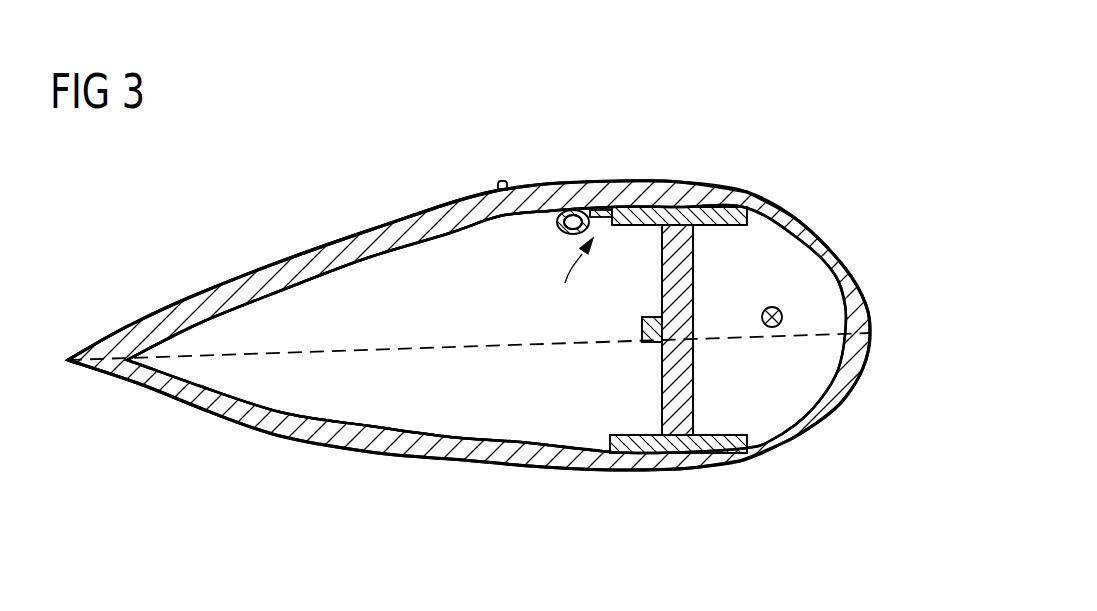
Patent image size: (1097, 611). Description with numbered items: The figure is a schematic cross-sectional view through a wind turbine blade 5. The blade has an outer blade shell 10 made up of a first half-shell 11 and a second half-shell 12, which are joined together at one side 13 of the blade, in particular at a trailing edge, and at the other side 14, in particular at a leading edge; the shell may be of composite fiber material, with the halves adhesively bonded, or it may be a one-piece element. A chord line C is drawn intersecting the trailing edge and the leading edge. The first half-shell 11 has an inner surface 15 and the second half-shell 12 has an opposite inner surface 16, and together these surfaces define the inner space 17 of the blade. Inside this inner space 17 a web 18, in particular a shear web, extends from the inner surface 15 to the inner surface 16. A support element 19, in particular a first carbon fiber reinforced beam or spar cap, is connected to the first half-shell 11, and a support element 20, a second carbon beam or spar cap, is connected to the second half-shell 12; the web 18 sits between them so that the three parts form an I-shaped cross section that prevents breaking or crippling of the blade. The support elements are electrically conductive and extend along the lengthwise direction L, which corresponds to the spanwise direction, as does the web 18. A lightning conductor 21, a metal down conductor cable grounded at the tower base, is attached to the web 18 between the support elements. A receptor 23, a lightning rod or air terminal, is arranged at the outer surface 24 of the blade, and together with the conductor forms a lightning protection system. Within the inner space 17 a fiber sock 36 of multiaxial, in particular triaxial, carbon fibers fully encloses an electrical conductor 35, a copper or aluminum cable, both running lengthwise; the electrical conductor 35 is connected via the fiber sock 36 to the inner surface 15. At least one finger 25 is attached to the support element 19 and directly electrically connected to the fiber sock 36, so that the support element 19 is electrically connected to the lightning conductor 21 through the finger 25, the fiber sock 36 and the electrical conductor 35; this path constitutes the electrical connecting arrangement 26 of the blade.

The wind turbine blade 5 is at (320, 143).
The outer blade shell 10 is at (192, 276).
The first half-shell 11 is at (467, 212).
The second half-shell 12 is at (290, 428).
The one side of the wind turbine blade 13 is at (68, 358).
The other side of the wind turbine blade 14 is at (872, 333).
The inner surface of the first half-shell 15 is at (328, 272).
The inner surface of the second half-shell 16 is at (389, 428).
The inner space 17 is at (485, 332).
The web 18 is at (672, 392).
The support element 19 is at (720, 204).
The support element 20 is at (715, 446).
The lightning conductor 21 is at (652, 317).
The receptor 23 is at (502, 181).
The outer surface 24 is at (386, 217).
The finger 25 is at (597, 210).
The electrical connecting arrangement 26 is at (564, 276).
The electrical conductor 35 is at (575, 210).
The fiber sock 36 is at (556, 224).
The chord line C is at (273, 358).
The lengthwise direction L is at (765, 309).